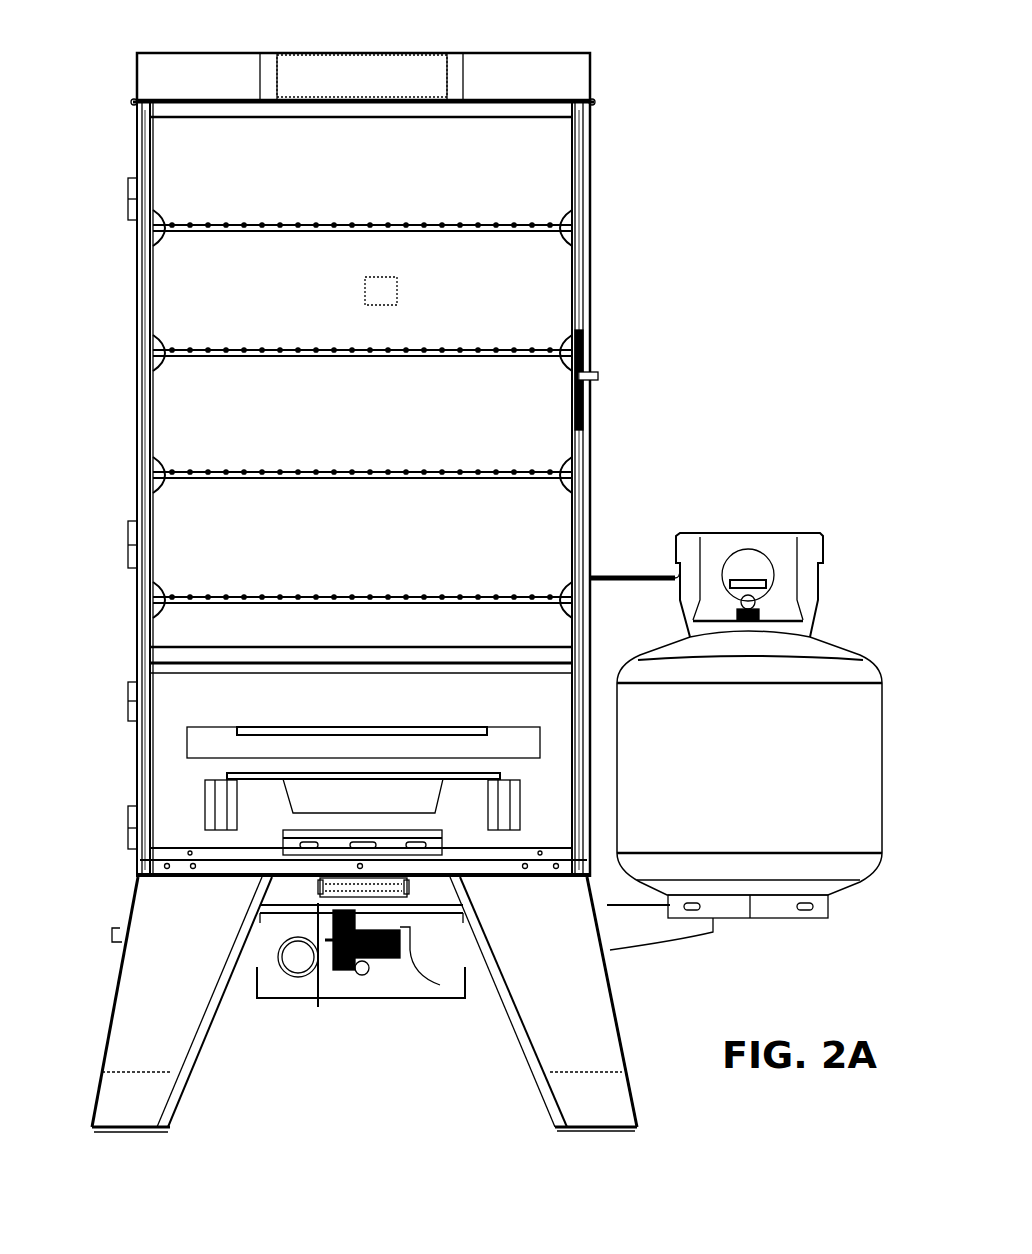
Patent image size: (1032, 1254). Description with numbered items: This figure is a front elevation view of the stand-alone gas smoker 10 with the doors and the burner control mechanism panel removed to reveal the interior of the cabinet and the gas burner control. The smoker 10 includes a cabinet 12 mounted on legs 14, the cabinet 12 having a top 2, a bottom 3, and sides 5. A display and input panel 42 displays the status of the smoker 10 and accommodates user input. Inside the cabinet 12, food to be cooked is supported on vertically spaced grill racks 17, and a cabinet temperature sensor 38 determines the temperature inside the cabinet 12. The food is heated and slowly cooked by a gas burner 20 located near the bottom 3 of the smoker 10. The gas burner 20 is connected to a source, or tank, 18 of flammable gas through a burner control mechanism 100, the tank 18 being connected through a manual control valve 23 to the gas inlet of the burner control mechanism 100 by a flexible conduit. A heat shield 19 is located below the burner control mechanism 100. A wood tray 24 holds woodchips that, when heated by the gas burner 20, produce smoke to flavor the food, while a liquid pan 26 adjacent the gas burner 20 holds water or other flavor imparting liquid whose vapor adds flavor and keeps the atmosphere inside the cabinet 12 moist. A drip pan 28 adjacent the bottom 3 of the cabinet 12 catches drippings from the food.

The top 2 is at (550, 52).
The bottom 3 is at (505, 867).
The sides 5 is at (145, 463).
The stand-alone gas smoker 10 is at (750, 150).
The cabinet 12 is at (590, 300).
The legs 14 is at (168, 1103).
The grill racks 17 is at (292, 223).
The source (tank) of flammable gas 18 is at (837, 647).
The heat shield 19 is at (302, 1000).
The gas burner 20 is at (383, 887).
The manual control valve 23 is at (748, 578).
The wood tray 24 is at (322, 795).
The liquid pan 26 is at (238, 746).
The drip pan 28 is at (199, 843).
The cabinet temperature sensor 38 is at (398, 288).
The display and input panel 42 is at (368, 73).
The burner control mechanism 100 is at (350, 980).